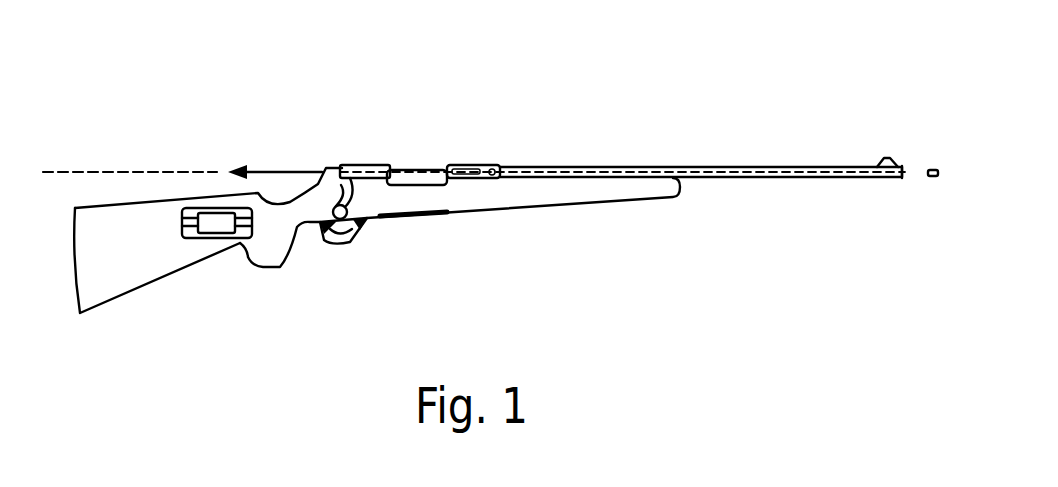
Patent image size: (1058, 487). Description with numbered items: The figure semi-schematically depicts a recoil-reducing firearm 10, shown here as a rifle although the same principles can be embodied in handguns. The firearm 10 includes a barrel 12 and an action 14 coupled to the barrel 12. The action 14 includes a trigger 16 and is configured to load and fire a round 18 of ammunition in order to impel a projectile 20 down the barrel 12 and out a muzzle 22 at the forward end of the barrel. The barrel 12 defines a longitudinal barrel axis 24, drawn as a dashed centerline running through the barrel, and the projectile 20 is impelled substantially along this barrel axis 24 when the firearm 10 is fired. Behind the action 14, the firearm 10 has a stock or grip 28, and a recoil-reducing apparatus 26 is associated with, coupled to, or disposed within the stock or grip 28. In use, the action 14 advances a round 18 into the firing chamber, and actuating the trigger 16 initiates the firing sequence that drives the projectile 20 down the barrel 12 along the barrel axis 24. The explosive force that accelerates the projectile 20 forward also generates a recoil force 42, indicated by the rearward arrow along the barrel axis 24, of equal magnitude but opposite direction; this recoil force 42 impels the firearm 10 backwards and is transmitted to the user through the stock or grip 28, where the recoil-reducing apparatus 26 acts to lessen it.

The recoil-reducing firearm 10 is at (257, 50).
The barrel 12 is at (768, 165).
The action 14 is at (363, 146).
The trigger 16 is at (352, 235).
The round of ammunition 18 is at (461, 166).
The projectile 20 is at (931, 180).
The muzzle 22 is at (906, 173).
The barrel axis 24 is at (127, 170).
The recoil-reducing apparatus 26 is at (212, 246).
The stock or grip 28 is at (162, 298).
The recoil force 42 is at (268, 170).